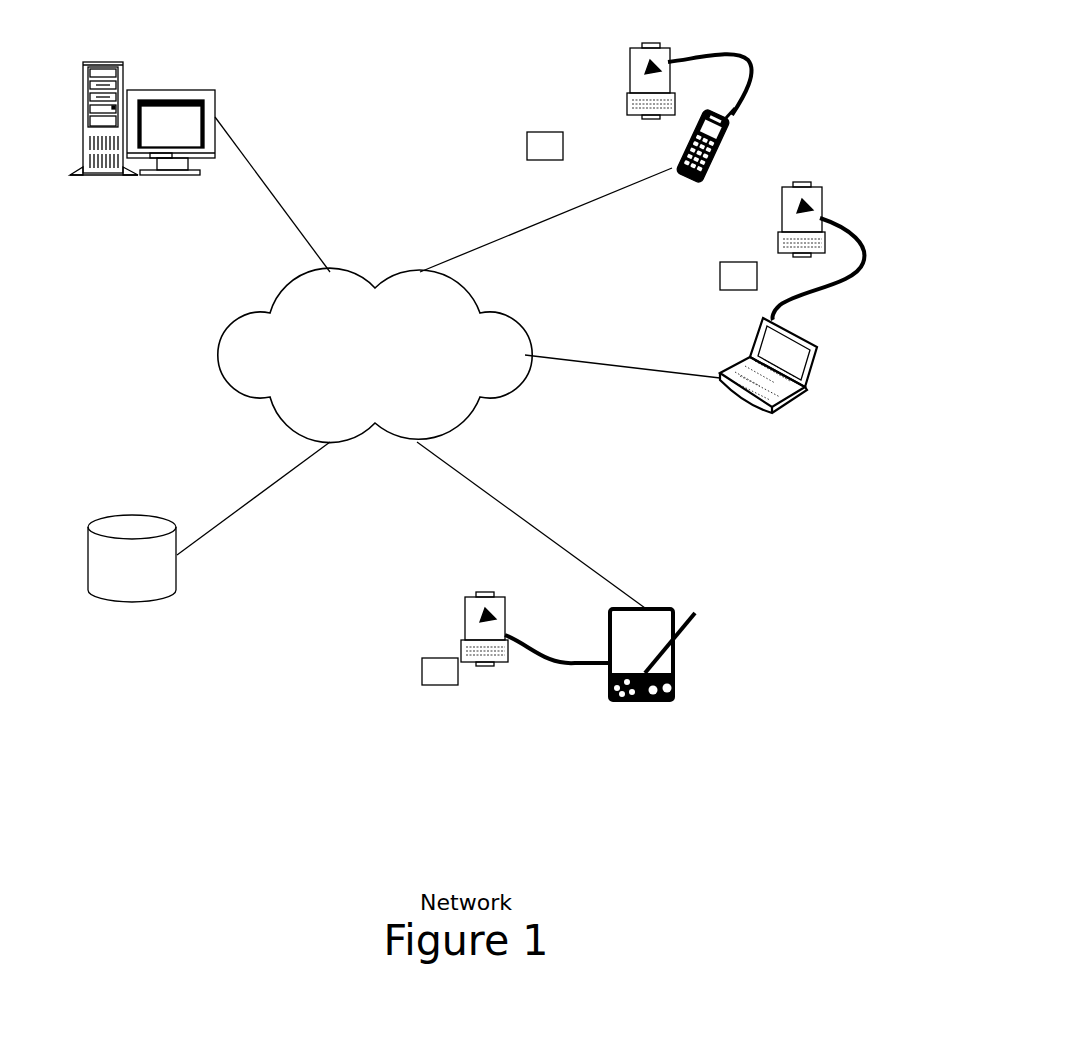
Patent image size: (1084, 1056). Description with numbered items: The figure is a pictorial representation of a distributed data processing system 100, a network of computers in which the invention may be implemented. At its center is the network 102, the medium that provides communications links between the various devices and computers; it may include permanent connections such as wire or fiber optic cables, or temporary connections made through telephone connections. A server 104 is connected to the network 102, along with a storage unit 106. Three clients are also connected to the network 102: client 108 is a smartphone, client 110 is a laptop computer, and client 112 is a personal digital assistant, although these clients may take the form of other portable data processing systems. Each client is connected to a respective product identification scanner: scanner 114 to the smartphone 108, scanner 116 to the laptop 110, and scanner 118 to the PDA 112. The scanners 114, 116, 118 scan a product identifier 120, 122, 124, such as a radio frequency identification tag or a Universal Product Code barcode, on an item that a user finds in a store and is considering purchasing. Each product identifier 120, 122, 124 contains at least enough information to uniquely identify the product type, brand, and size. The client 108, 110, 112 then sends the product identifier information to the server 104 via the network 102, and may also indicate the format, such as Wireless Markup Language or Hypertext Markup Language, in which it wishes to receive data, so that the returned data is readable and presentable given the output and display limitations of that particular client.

The distributed data processing system 100 is at (477, 874).
The network 102 is at (357, 366).
The server 104 is at (127, 204).
The storage unit 106 is at (144, 644).
The client 108 is at (670, 212).
The client 110 is at (773, 442).
The client 112 is at (627, 734).
The product identification scanner 114 is at (632, 44).
The product identification scanner 116 is at (789, 181).
The product identification scanner 118 is at (461, 605).
The product identifier 120 is at (526, 146).
The product identifier 122 is at (719, 276).
The product identifier 124 is at (421, 670).